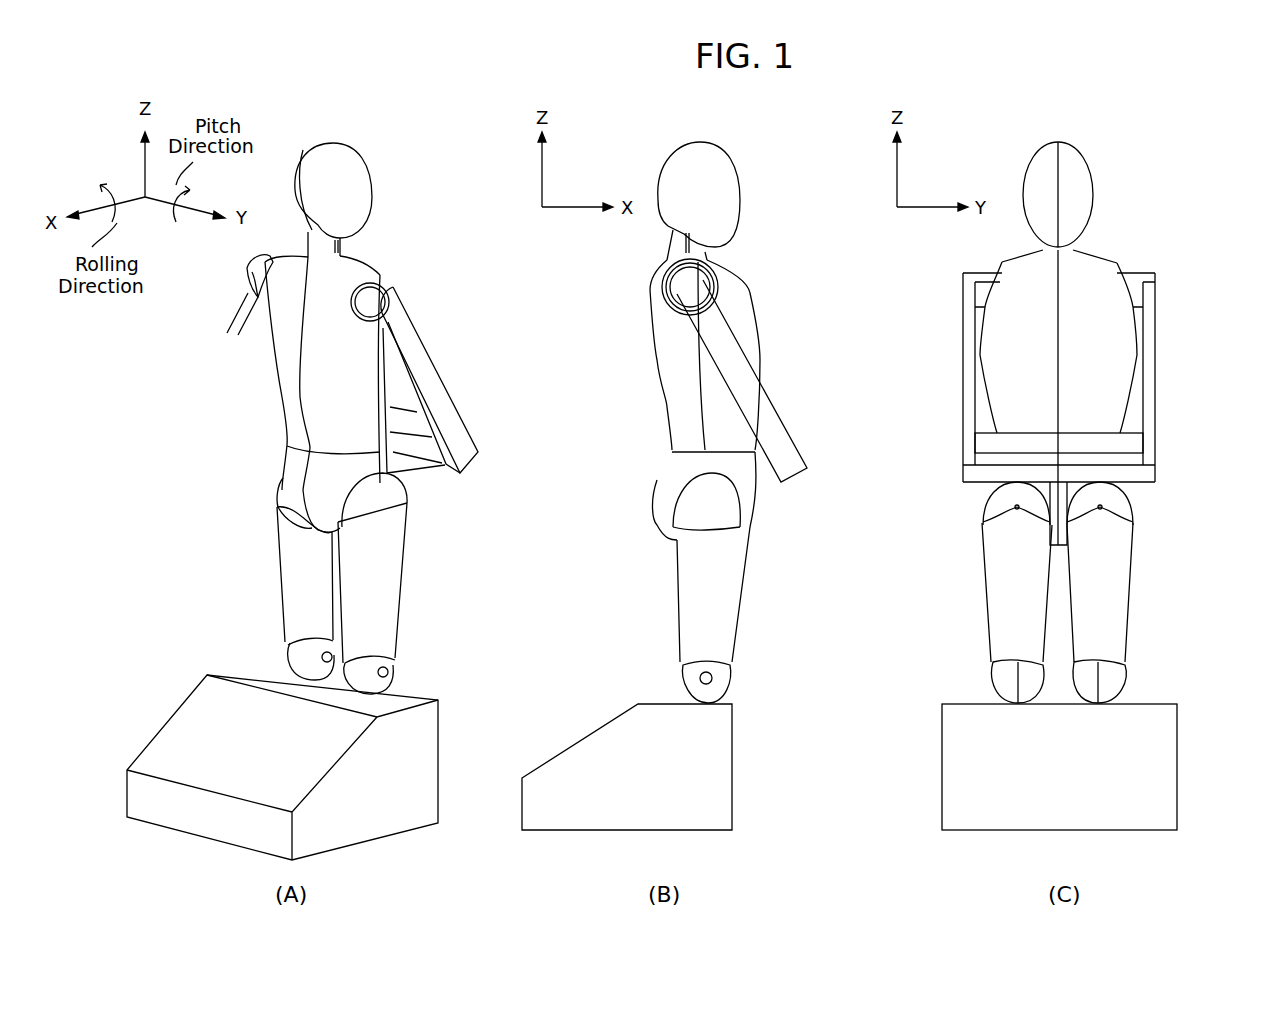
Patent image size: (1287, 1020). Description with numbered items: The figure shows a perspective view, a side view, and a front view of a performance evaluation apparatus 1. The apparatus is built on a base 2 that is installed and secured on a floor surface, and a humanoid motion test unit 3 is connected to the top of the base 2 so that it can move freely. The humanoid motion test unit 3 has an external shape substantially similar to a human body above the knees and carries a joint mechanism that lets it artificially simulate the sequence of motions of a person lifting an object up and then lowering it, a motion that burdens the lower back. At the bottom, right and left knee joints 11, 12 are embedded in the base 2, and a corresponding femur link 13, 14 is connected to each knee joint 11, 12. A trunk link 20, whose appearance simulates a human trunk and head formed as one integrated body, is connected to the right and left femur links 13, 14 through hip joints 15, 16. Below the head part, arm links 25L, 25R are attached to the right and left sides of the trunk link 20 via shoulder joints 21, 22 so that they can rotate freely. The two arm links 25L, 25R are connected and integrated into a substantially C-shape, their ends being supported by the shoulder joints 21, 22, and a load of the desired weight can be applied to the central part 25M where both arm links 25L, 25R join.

The performance evaluation apparatus 1 is at (200, 391).
The base 2 is at (170, 715).
The humanoid motion test unit 3 is at (392, 239).
The knee joint 11 is at (282, 650).
The knee joint 12 is at (393, 667).
The femur link 13 is at (282, 560).
The femur link 14 is at (390, 573).
The hip joint 15 is at (277, 485).
The hip joint 16 is at (382, 497).
The trunk link 20 is at (296, 407).
The shoulder joint 21 is at (250, 270).
The shoulder joint 22 is at (378, 302).
The left arm link 25L is at (255, 305).
The right arm link 25R is at (435, 387).
The central part 25M is at (418, 447).